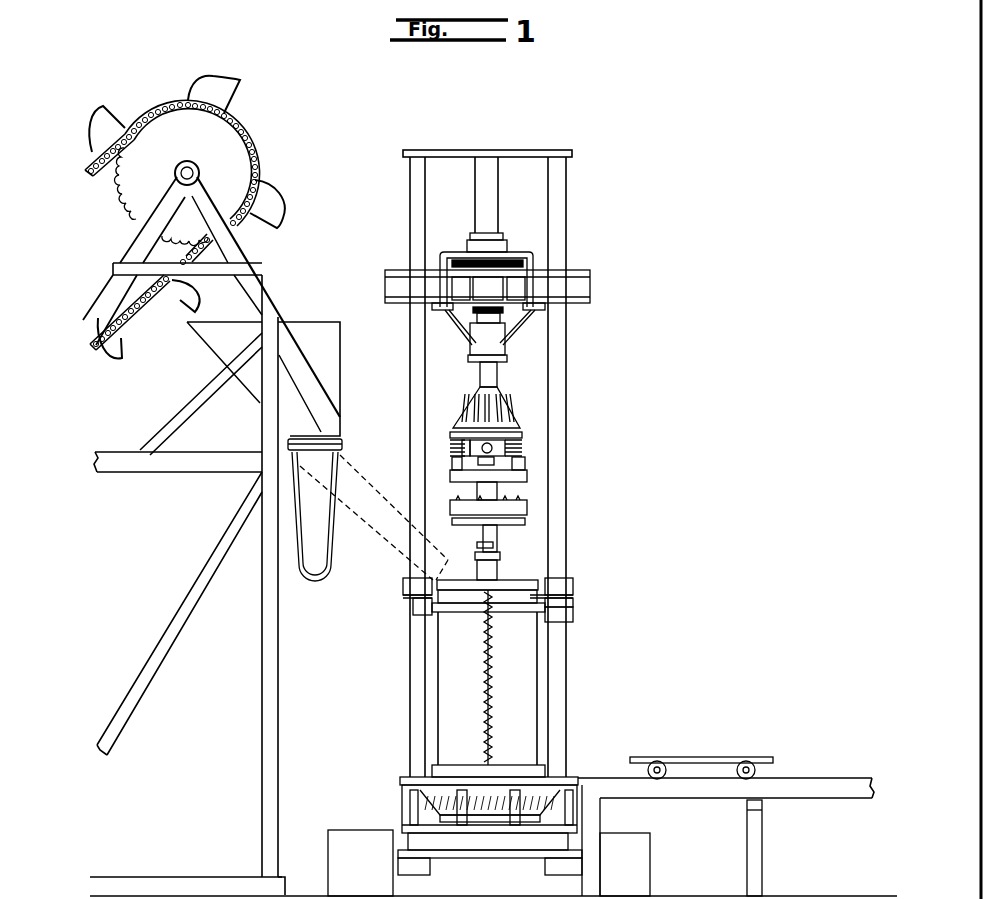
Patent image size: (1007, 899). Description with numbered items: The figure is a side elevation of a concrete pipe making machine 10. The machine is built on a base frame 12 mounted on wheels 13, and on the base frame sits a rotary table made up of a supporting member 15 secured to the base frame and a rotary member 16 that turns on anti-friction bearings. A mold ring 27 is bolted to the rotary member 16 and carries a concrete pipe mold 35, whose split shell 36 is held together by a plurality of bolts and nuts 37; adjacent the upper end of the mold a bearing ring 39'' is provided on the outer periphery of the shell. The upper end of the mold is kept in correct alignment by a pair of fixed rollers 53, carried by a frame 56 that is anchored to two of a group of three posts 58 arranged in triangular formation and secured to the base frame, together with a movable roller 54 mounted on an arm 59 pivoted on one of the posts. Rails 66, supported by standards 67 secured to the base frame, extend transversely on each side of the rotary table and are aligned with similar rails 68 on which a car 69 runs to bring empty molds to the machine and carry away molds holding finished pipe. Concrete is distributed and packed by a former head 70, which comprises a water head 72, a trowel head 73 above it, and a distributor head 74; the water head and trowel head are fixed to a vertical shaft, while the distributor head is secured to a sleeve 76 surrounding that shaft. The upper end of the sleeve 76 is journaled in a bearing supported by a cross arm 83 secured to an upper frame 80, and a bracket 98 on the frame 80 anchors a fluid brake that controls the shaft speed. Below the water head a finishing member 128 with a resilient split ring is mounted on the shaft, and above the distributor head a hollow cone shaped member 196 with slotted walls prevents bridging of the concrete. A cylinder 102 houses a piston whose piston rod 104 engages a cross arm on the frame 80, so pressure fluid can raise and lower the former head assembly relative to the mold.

The concrete pipe making machine 10 is at (495, 133).
The posts 58 is at (466, 467).
The bracket 98 is at (488, 266).
The frame 80 is at (505, 307).
The cross arm 83 is at (504, 342).
The sleeve 76 is at (470, 374).
The hollow cone shaped member 196 is at (473, 407).
The former head 70 is at (529, 415).
The distributor head 74 is at (523, 453).
The trowel head 73 is at (523, 483).
The water head 72 is at (523, 507).
The finishing member 128 is at (528, 529).
The piston rod 104 is at (467, 538).
The cylinder 102 is at (507, 566).
The frame 56 is at (506, 585).
The fixed rollers 53 is at (400, 607).
The arm 59 is at (579, 606).
The movable roller 54 is at (579, 620).
The bearing ring 39'' is at (488, 623).
The split shell 36 is at (457, 677).
The bolts and nuts 37 is at (504, 677).
The concrete pipe mold 35 is at (568, 688).
The mold ring 27 is at (513, 758).
The standards 67 is at (470, 778).
The rails 66 is at (475, 790).
The rotary member 16 is at (465, 802).
The supporting member 15 is at (455, 820).
The base frame 12 is at (490, 860).
The wheels 13 is at (495, 849).
The rails 68 is at (726, 823).
The car 69 is at (701, 754).